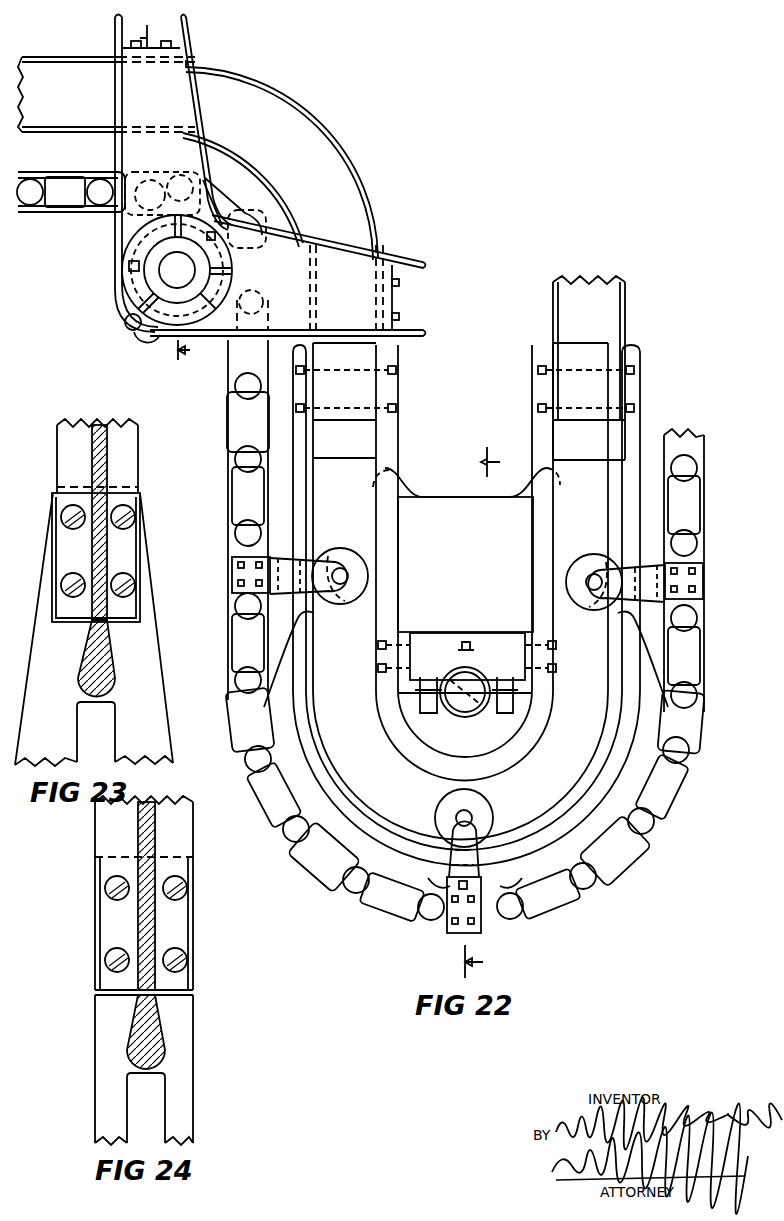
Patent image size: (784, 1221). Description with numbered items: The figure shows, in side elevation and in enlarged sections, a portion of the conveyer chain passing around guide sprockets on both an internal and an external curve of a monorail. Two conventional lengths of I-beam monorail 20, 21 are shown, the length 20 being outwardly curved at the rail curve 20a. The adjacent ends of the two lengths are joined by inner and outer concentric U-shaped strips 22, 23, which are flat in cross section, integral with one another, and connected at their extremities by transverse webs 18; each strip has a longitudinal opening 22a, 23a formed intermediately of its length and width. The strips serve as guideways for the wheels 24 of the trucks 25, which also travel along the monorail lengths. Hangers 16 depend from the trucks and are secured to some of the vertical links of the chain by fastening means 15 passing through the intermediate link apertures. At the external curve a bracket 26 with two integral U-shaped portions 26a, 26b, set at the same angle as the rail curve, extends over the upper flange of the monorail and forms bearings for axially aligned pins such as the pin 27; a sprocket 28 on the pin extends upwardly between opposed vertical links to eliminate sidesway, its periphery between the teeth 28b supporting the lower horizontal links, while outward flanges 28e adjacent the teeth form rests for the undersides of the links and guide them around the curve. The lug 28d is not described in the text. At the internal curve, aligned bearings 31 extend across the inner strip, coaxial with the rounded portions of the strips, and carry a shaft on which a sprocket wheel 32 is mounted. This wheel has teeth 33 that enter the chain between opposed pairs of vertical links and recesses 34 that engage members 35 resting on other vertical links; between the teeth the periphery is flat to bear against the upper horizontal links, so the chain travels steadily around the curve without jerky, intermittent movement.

In FIG. 22, the fastening means 15 is at (452, 930).
In FIG. 22, the truck hangers 16 is at (470, 876).
In FIG. 22, the transverse webs 18 is at (469, 440).
In FIG. 23, the transverse webs 18 is at (110, 655).
In FIG. 24, the transverse webs 18 is at (140, 1018).
In FIG. 22, the monorail length 20 is at (106, 94).
In FIG. 23, the monorail length 20 is at (97, 519).
In FIG. 22, the rail curve 20a is at (280, 160).
In FIG. 22, the monorail length 21 is at (586, 368).
In FIG. 24, the monorail length 21 is at (144, 893).
In FIG. 22, the inner U-shaped strip 22 is at (462, 745).
In FIG. 23, the inner U-shaped strip 22 is at (94, 629).
In FIG. 23, the opening 22a is at (96, 732).
In FIG. 22, the outer U-shaped strip 23 is at (352, 810).
In FIG. 24, the outer U-shaped strip 23 is at (144, 1067).
In FIG. 24, the opening 23a is at (146, 1108).
In FIG. 22, the wheels 24 is at (591, 497).
In FIG. 22, the trucks 25 is at (458, 820).
In FIG. 22, the bracket 26 is at (122, 234).
In FIG. 22, the U-shaped portion 26a is at (173, 174).
In FIG. 22, the U-shaped portion 26b is at (288, 257).
In FIG. 22, the pin 27 is at (177, 270).
In FIG. 22, the sprocket 28 is at (210, 305).
In FIG. 22, the sprocket teeth 28b is at (143, 338).
In FIG. 22, the lug 28d is at (127, 264).
In FIG. 22, the outward flanges 28e is at (126, 325).
In FIG. 22, the bearings 31 is at (447, 675).
In FIG. 22, the sprocket wheel 32 is at (465, 564).
In FIG. 22, the teeth 33 is at (525, 491).
In FIG. 22, the recesses 34 is at (448, 886).
In FIG. 22, the members 35 is at (648, 560).